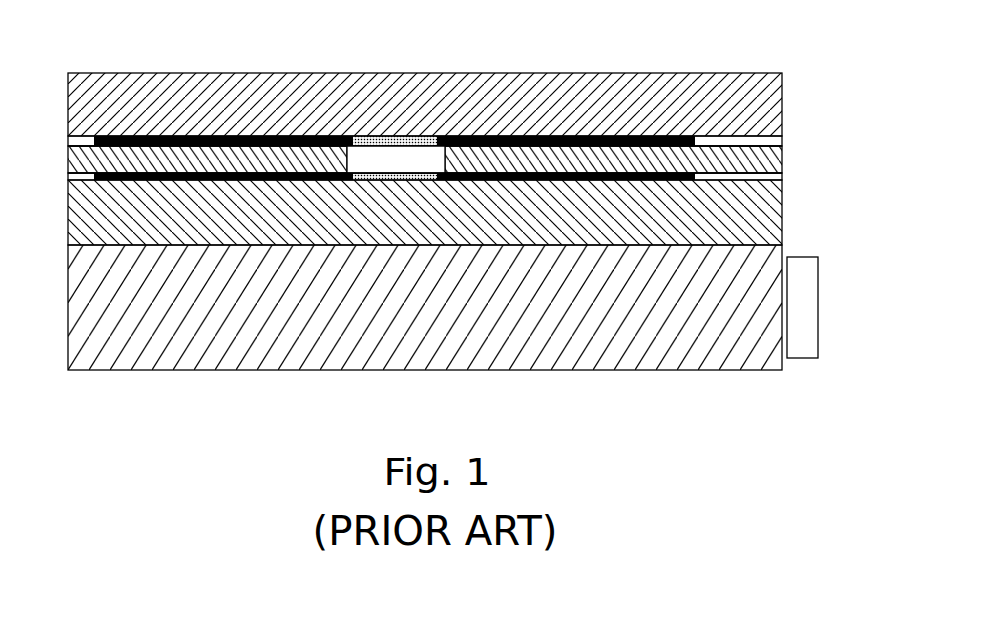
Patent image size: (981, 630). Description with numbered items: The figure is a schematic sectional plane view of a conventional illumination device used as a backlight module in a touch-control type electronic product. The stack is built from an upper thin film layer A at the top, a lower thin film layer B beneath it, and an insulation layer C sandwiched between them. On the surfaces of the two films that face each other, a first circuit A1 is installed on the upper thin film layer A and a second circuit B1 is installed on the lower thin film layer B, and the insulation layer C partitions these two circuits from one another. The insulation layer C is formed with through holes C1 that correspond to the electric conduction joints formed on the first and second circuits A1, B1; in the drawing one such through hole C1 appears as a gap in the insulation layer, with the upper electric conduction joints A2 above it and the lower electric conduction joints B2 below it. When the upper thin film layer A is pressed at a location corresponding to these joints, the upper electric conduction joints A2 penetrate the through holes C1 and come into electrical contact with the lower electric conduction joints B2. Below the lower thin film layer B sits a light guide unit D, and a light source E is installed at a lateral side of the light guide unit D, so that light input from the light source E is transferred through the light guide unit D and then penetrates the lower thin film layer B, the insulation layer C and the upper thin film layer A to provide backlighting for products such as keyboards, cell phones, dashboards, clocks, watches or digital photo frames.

The upper thin film layer A is at (615, 103).
The first circuit A1 is at (667, 132).
The upper electric conduction joints A2 is at (413, 140).
The lower thin film layer B is at (763, 227).
The second circuit B1 is at (685, 187).
The lower electric conduction joints B2 is at (363, 172).
The insulation layer C is at (773, 160).
The through holes C1 is at (397, 157).
The light guide unit D is at (637, 347).
The light source E is at (803, 308).